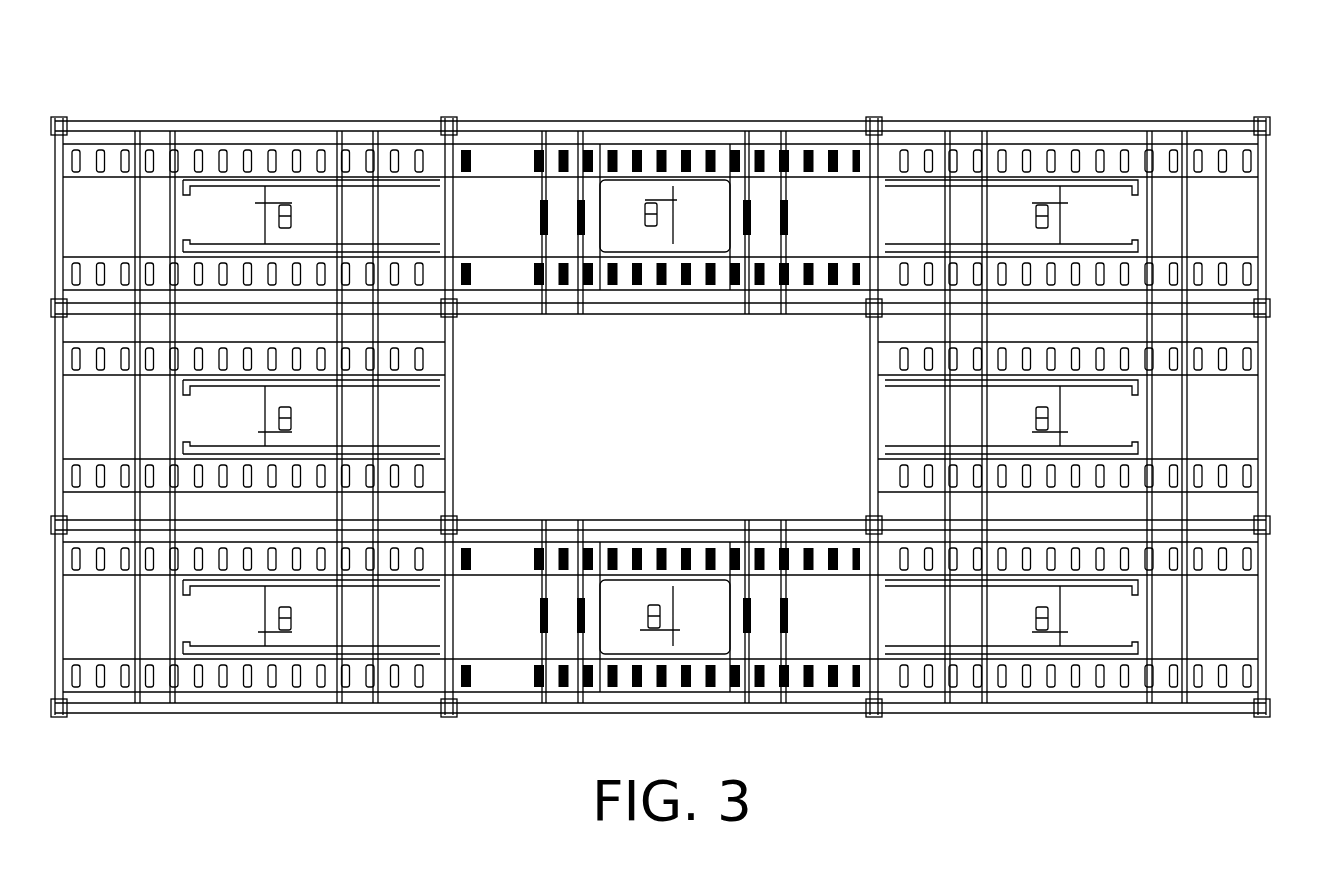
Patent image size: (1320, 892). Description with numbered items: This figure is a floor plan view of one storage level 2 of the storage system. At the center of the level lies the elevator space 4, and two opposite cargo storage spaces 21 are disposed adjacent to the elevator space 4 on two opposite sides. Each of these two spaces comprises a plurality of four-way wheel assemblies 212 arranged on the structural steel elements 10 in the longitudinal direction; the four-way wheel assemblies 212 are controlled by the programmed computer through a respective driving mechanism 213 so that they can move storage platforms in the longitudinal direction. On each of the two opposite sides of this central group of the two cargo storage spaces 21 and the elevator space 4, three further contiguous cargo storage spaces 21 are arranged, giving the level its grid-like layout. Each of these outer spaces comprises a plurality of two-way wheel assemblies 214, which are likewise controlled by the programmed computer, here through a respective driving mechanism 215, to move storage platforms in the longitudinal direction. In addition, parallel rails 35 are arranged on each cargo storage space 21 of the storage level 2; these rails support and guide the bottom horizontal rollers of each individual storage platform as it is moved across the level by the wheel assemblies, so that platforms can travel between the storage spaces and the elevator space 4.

The storage level 2 is at (884, 104).
The elevator space 4 is at (690, 322).
The structural steel elements 10 is at (60, 645).
The cargo storage spaces 21 is at (90, 200).
The parallel rails 35 is at (418, 252).
The four-way wheel assemblies 212 is at (800, 160).
The driving mechanism 213 is at (652, 203).
The two-way wheel assemblies 214 is at (75, 158).
The driving mechanism 215 is at (286, 204).